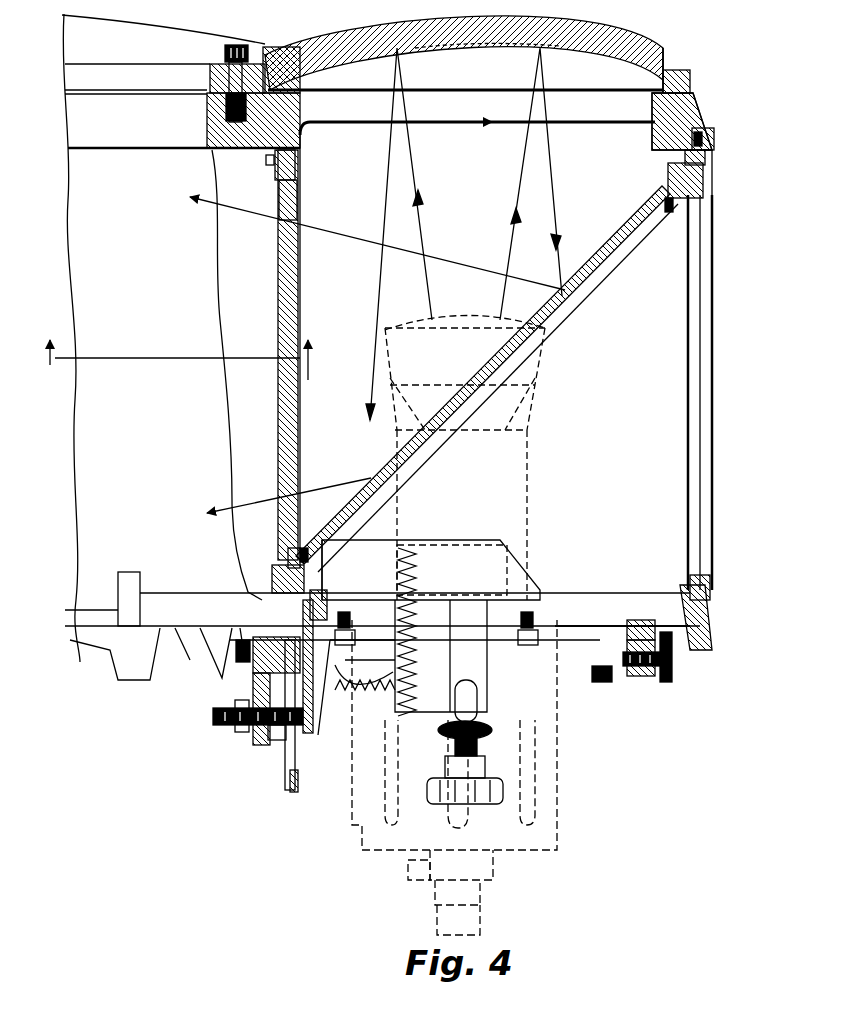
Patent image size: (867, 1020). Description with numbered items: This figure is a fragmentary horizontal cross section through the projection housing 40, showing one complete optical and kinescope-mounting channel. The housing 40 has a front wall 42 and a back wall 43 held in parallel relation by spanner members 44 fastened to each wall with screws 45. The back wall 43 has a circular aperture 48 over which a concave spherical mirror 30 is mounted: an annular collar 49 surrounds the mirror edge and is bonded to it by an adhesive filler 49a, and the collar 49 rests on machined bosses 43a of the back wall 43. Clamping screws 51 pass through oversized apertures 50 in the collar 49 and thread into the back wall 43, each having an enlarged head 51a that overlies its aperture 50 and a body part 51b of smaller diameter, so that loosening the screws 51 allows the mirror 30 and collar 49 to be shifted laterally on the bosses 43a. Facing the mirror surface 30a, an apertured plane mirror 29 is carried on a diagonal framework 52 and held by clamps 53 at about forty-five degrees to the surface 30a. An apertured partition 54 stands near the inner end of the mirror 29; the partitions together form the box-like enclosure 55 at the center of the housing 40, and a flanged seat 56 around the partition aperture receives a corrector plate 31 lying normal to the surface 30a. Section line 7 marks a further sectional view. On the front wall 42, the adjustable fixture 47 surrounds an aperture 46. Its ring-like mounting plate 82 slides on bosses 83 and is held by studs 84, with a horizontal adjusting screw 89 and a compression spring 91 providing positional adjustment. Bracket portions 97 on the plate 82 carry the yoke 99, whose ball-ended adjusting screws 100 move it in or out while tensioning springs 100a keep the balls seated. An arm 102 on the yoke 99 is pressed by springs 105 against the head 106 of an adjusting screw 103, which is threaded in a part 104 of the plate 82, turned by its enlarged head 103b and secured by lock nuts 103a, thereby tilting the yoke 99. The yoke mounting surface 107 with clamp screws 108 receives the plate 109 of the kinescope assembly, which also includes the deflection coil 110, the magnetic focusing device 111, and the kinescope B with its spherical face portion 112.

The section line 7- 7 is at (178, 368).
The apertured plane mirror 29 is at (592, 272).
The concave spherical mirror 30 is at (630, 46).
The mirror surface 30a is at (330, 64).
The corrector plate 31 is at (286, 318).
The housing 40 is at (722, 136).
The front wall 42 is at (690, 640).
The back wall 43 is at (694, 112).
The boss 43a is at (212, 100).
The spanner member 44 is at (704, 436).
The screw 45 is at (708, 130).
The aperture 46 is at (600, 610).
The adjustable fixture 47 is at (636, 688).
The circular aperture 48 is at (492, 126).
The annular collar 49 is at (163, 76).
The adhesive filler 49a is at (268, 60).
The collar aperture 50 is at (214, 74).
The clamping screw 51 is at (238, 42).
The enlarged head portion 51a is at (228, 48).
The body part 51b is at (226, 80).
The supporting framework 52 is at (668, 170).
The clamp 53 is at (668, 210).
The apertured partition 54 is at (296, 162).
The box-like enclosure 55 is at (240, 236).
The annular flanged seat 56 is at (298, 190).
The mounting plate 82 is at (648, 680).
The boss 83 is at (642, 616).
The stud 84 is at (602, 684).
The adjusting screw 89 is at (674, 680).
The compression spring 91 is at (236, 652).
The bracket portion 97 is at (435, 545).
The yoke member 99 is at (385, 560).
The adjusting screw 100 is at (477, 745).
The tensioning spring 100a is at (420, 590).
The arm 102 is at (308, 730).
The adjusting screw 103 is at (213, 716).
The lock nut 103a is at (240, 733).
The enlarged head part 103b is at (285, 752).
The outwardly extending part 104 is at (255, 700).
The spring 105 is at (352, 700).
The screw head 106 is at (298, 780).
The mounting surface 107 is at (345, 608).
The clamp screw 108 is at (352, 636).
The mounting plate 109 is at (550, 612).
The deflection coil 110 is at (530, 470).
The magnetic focusing device 111 is at (565, 786).
The spherical face portion 112 is at (415, 320).
The kinescope B is at (485, 902).